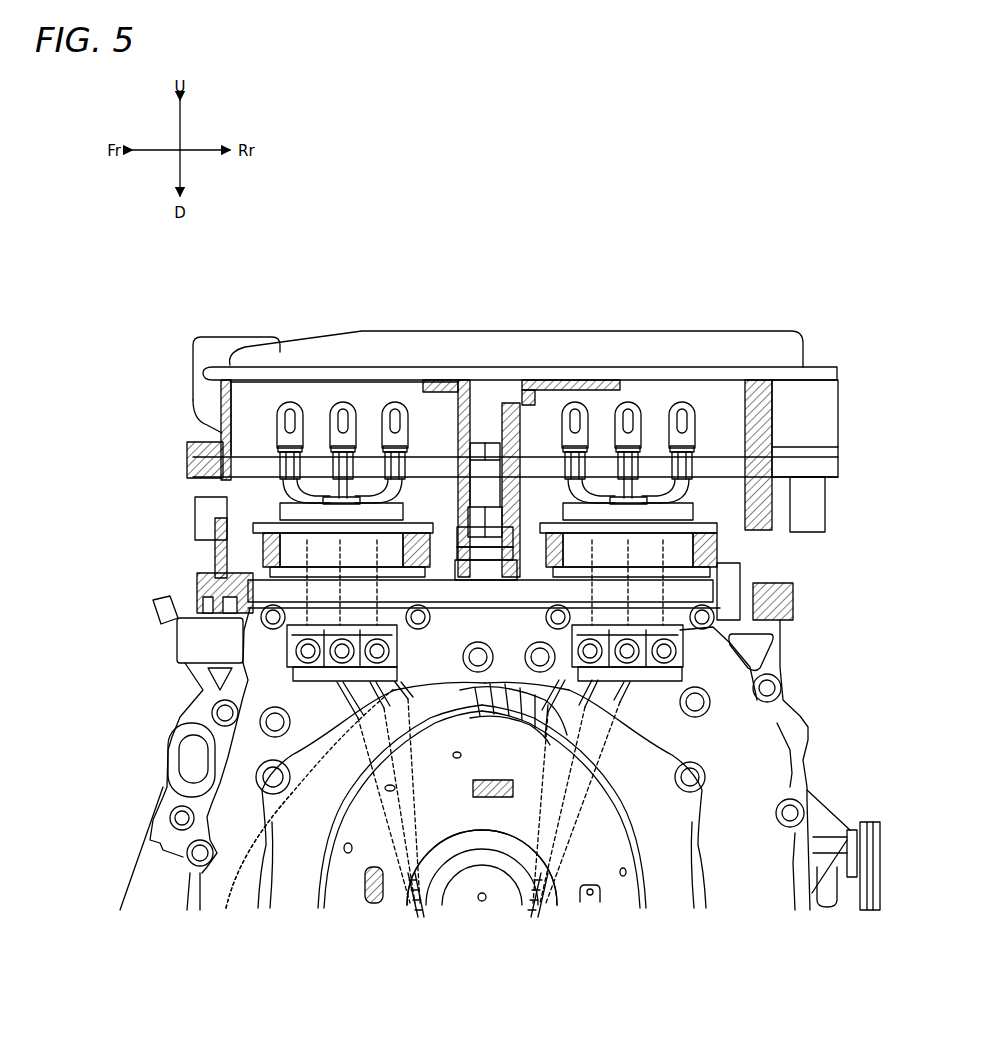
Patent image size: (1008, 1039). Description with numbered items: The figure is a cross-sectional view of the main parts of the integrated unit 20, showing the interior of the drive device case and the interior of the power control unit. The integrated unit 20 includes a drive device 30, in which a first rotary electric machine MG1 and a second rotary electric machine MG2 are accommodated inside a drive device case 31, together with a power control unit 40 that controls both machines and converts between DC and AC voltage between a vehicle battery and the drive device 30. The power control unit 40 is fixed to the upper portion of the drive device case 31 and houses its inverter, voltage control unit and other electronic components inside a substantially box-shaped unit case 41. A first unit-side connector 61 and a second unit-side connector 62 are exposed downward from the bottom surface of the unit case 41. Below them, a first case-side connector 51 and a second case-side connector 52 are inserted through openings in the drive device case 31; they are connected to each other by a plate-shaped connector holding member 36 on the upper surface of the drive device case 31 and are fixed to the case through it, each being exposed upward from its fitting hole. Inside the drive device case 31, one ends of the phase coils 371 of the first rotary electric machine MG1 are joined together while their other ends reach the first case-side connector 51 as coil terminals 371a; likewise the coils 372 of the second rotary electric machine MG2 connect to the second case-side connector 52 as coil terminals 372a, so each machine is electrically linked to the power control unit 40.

The integrated unit 20 is at (823, 274).
The power control unit 40 is at (770, 330).
The unit case 41 is at (415, 338).
The first unit-side connector 61 is at (280, 517).
The second unit-side connector 62 is at (770, 502).
The first case-side connector 51 is at (258, 552).
The second case-side connector 52 is at (765, 533).
The connector holding member 36 is at (480, 592).
The drive device case 31 is at (205, 688).
The drive device 30 is at (810, 760).
The coil 371 is at (232, 908).
The coil 372 is at (241, 889).
The coil terminal 371a is at (419, 917).
The coil terminal 372a is at (529, 917).
The first rotary electric machine MG1 is at (560, 870).
The second rotary electric machine MG2 is at (514, 934).